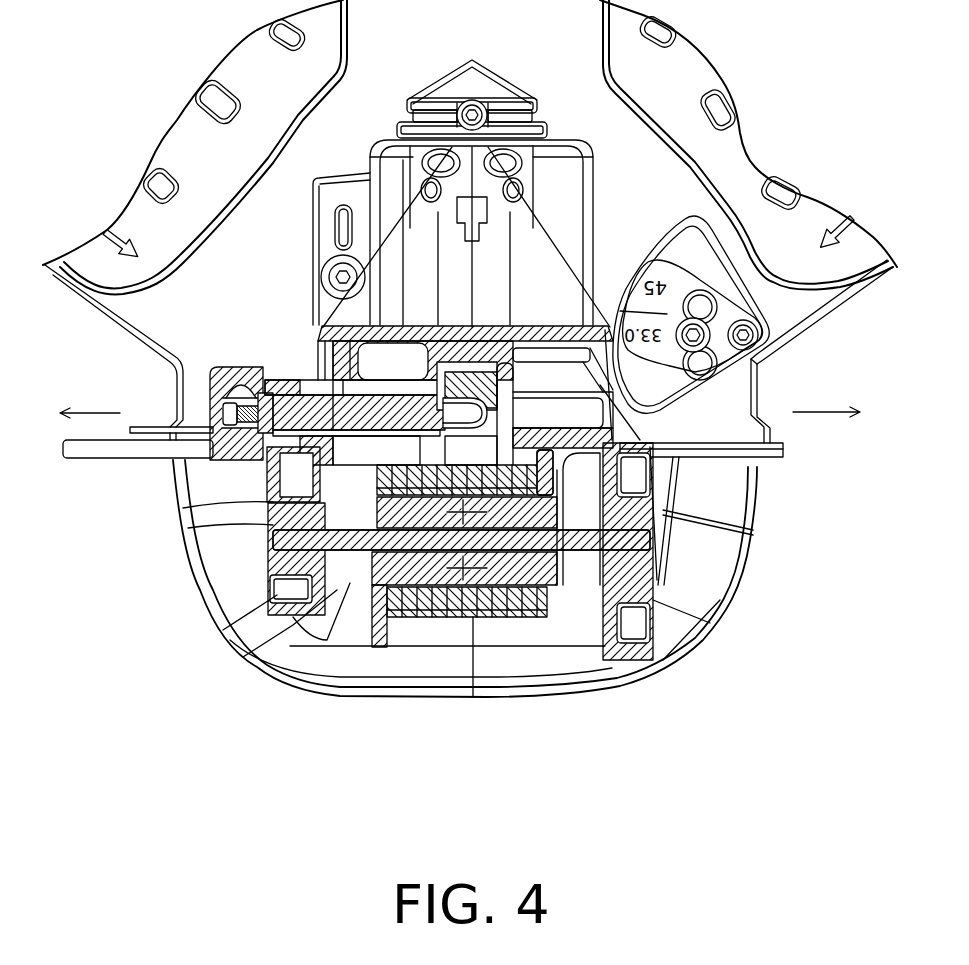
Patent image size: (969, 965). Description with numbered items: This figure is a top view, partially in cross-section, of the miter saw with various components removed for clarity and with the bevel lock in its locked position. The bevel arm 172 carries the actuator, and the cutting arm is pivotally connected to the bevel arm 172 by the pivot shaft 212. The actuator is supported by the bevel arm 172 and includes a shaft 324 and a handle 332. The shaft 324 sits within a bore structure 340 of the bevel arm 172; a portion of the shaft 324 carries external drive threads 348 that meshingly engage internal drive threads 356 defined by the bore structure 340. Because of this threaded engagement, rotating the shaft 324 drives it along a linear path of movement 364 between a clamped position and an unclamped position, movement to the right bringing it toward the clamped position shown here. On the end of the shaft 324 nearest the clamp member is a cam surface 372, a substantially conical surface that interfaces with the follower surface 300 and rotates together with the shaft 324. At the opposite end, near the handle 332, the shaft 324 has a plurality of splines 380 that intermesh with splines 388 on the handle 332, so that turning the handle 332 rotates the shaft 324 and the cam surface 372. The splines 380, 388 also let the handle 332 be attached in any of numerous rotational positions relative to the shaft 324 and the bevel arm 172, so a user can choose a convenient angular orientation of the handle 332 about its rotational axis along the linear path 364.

The bevel arm 172 is at (517, 362).
The pivot shaft 212 is at (223, 630).
The follower surface 300 is at (467, 392).
The shaft 324 is at (317, 412).
The handle 332 is at (237, 367).
The bore structure 340 is at (270, 392).
The external drive threads 348 is at (293, 537).
The internal drive threads 356 is at (357, 400).
The linear path of movement 364 is at (817, 413).
The cam surface 372 is at (433, 388).
The splines 380 is at (210, 387).
The splines 388 is at (213, 465).